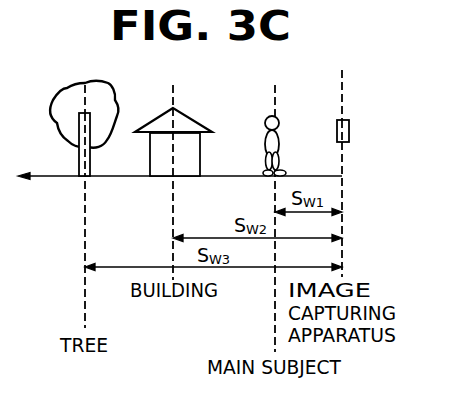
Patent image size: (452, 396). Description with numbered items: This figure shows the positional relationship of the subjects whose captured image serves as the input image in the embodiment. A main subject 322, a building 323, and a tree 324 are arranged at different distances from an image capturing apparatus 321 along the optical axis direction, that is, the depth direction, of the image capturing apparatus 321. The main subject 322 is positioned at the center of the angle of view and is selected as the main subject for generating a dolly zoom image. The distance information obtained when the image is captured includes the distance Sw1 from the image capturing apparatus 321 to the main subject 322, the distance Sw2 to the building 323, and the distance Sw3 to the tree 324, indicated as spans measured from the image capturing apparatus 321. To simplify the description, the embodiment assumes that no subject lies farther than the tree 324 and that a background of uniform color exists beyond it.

The image capturing apparatus 321 is at (337, 120).
The main subject 322 is at (266, 118).
The building 323 is at (157, 119).
The tree 324 is at (67, 101).